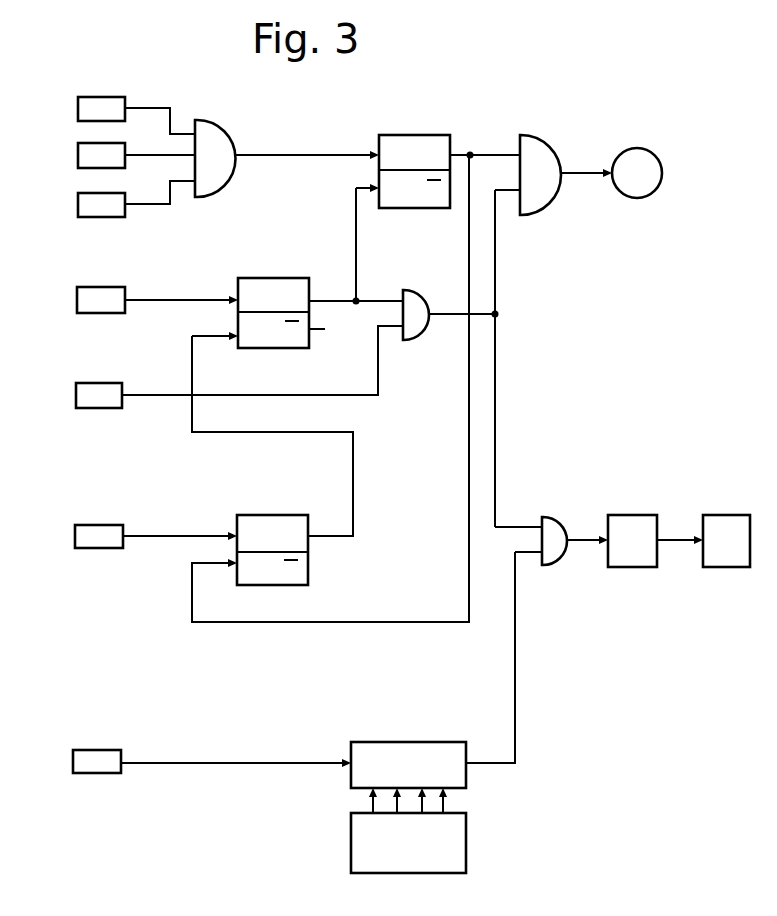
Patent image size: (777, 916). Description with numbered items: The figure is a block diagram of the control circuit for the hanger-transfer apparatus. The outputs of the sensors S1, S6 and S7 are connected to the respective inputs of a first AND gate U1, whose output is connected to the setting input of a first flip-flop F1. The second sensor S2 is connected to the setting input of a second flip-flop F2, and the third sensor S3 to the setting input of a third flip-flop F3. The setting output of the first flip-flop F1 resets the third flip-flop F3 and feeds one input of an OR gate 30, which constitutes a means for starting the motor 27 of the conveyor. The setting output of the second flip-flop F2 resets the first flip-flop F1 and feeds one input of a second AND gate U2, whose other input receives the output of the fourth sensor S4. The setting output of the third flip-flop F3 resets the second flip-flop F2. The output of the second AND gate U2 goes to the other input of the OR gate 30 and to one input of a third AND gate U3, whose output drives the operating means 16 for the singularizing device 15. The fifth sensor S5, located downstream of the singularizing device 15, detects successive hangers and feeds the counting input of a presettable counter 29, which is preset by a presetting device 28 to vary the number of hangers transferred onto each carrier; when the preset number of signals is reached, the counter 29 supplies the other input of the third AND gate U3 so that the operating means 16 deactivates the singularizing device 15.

The first sensor S1 is at (78, 109).
The sixth sensor S6 is at (78, 156).
The seventh sensor S7 is at (78, 205).
The second sensor S2 is at (77, 299).
The fourth sensor S4 is at (76, 396).
The third sensor S3 is at (75, 536).
The fifth sensor S5 is at (73, 752).
The first AND gate U1 is at (225, 136).
The second AND gate U2 is at (410, 292).
The third AND gate U3 is at (557, 520).
The first flip-flop F1 is at (407, 135).
The second flip-flop F2 is at (260, 278).
The third flip-flop F3 is at (263, 515).
The OR gate 30 is at (540, 140).
The motor 27 is at (652, 152).
The operating means 16 is at (634, 515).
The singularizing device 15 is at (724, 515).
The presettable counter 29 is at (421, 742).
The presetting device 28 is at (468, 846).